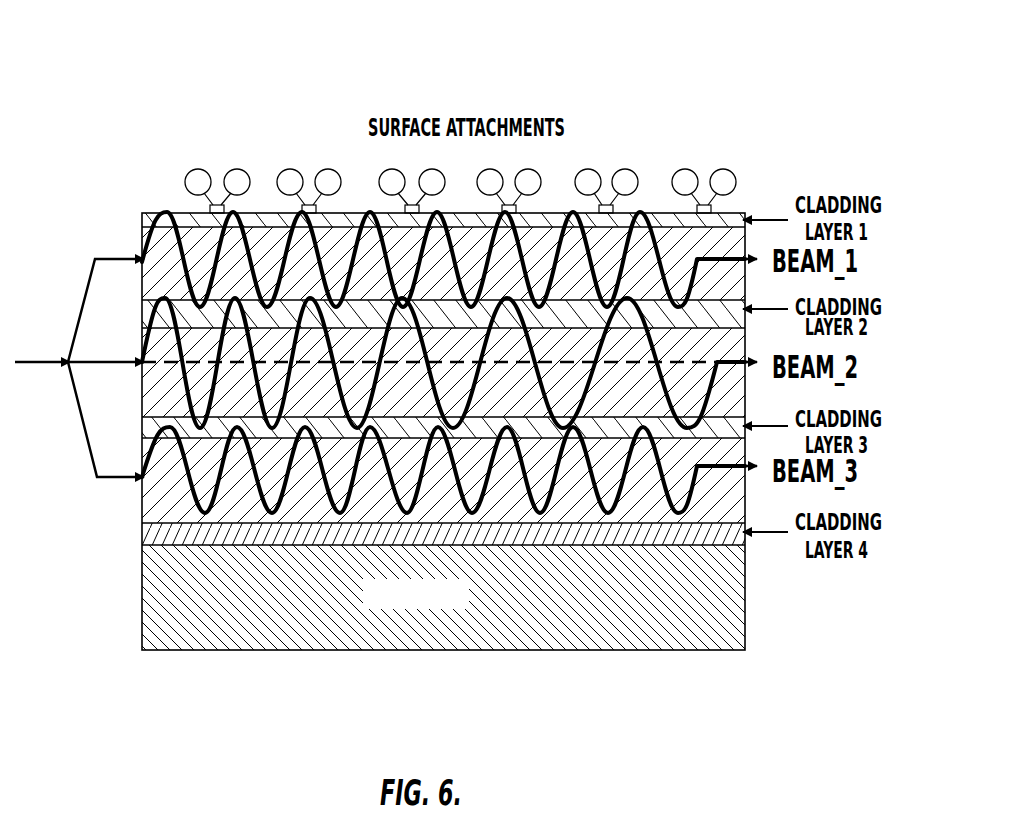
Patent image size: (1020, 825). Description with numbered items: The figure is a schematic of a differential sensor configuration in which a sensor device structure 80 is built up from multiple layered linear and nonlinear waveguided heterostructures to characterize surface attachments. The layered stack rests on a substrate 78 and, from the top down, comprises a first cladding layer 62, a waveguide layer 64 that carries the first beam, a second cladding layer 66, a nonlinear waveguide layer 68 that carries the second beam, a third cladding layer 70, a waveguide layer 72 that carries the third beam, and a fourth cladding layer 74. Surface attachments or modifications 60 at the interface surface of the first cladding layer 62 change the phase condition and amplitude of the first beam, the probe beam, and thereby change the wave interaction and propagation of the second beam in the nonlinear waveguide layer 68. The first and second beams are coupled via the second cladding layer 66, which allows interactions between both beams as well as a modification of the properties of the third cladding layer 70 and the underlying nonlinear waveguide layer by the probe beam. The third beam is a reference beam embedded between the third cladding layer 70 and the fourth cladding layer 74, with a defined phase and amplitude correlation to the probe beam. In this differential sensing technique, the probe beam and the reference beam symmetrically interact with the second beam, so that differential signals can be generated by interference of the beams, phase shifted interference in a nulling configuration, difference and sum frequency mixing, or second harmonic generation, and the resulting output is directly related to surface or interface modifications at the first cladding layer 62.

The sensor device structure 80 is at (668, 100).
The surface attachments/modifications 60 is at (735, 170).
The first cladding layer 62 is at (142, 223).
The waveguide layer for Beam 1 64 is at (142, 280).
The second cladding layer 66 is at (142, 313).
The nonlinear waveguide layer 68 is at (142, 393).
The third cladding layer 70 is at (142, 430).
The waveguide layer for Beam 3 72 is at (142, 500).
The fourth cladding layer 74 is at (142, 533).
The substrate 78 is at (142, 595).